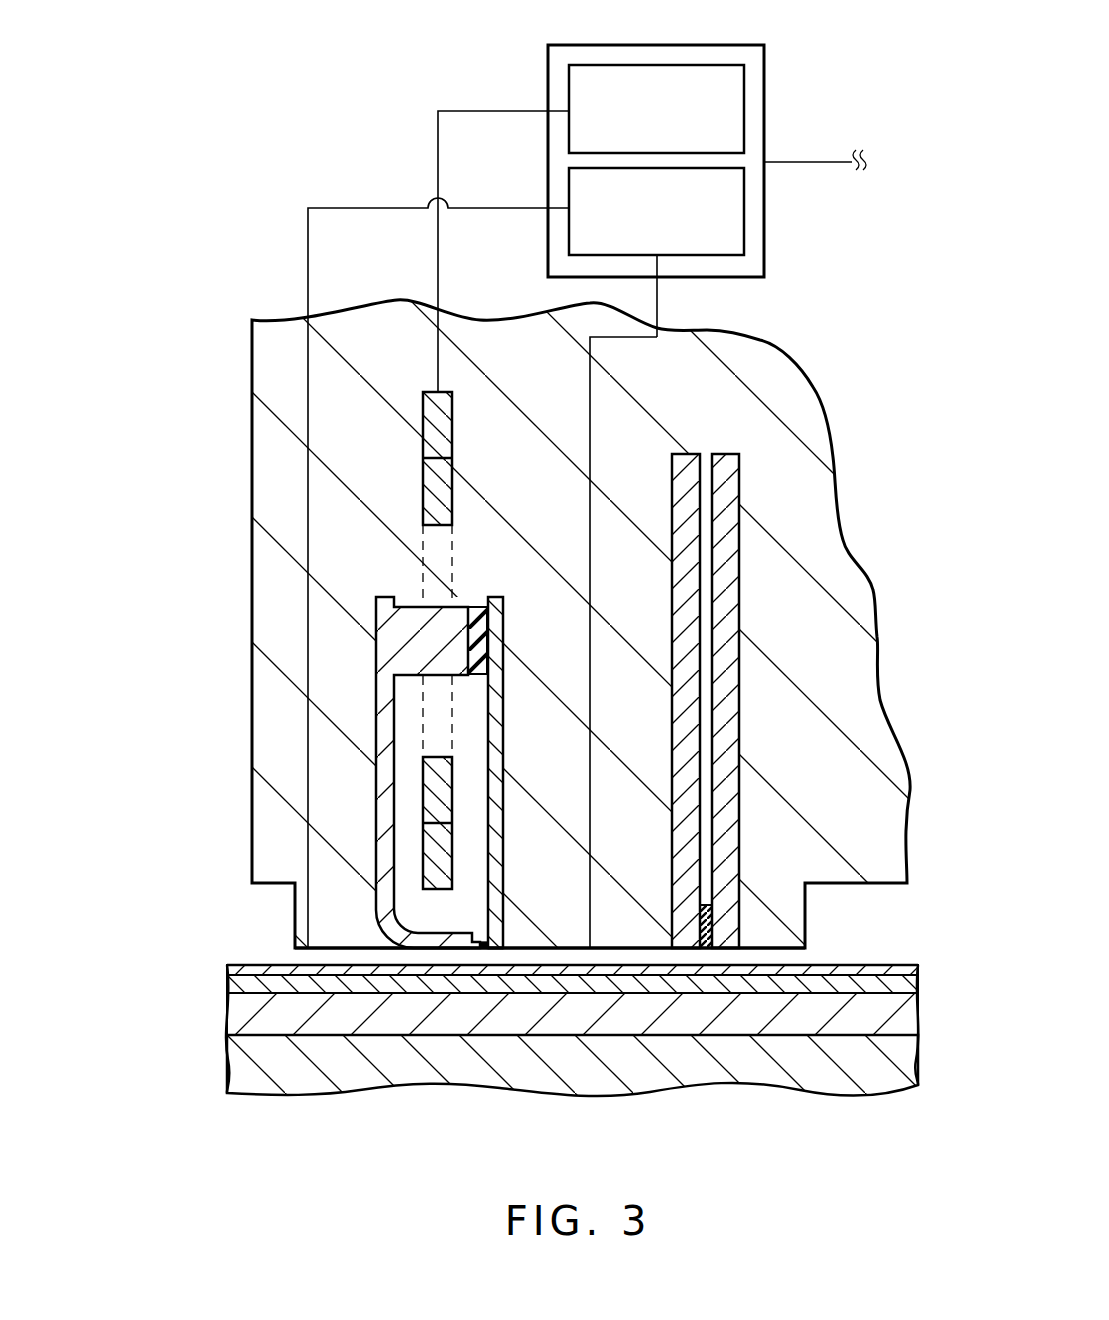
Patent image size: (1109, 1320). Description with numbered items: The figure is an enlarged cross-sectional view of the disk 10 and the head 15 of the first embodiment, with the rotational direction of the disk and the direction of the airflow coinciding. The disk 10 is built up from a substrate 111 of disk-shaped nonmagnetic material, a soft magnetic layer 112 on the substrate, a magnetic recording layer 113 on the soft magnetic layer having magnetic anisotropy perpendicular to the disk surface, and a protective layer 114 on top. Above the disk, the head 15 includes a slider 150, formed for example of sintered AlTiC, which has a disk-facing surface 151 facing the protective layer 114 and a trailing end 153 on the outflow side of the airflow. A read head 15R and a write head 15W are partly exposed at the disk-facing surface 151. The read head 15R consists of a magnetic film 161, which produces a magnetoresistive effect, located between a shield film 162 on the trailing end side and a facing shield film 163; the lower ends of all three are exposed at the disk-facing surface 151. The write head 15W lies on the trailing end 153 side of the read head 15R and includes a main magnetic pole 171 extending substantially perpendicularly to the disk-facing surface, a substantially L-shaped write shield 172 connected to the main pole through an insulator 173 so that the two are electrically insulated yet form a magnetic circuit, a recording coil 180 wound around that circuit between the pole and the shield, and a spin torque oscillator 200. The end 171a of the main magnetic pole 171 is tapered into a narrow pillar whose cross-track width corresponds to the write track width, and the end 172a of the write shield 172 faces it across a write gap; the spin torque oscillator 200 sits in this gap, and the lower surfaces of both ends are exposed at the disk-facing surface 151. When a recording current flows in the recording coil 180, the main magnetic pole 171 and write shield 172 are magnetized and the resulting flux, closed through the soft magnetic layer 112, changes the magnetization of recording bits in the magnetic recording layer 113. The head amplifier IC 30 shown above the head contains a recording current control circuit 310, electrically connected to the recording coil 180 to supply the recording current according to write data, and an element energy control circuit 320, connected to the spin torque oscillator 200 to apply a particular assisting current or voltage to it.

The head amplifier IC 30 is at (690, 44).
The recording current control circuit 310 is at (744, 107).
The element energy control circuit 320 is at (744, 215).
The trailing end 153 is at (252, 540).
The head 15 is at (153, 595).
The write head 15W is at (513, 392).
The recording coil 180 is at (423, 490).
The write shield 172 is at (370, 753).
The insulator 173 is at (477, 637).
The main magnetic pole 171 is at (503, 796).
The spin torque oscillator 200 is at (478, 948).
The end of the write shield 172a is at (403, 940).
The end of the main magnetic pole 171a is at (505, 948).
The shield film 162 is at (688, 682).
The shield film 163 is at (725, 640).
The magnetic film 161 is at (706, 918).
The read head 15R is at (760, 569).
The slider 150 is at (805, 400).
The disk-facing surface 151 is at (780, 955).
The disk 10 is at (119, 982).
The protective layer 114 is at (227, 968).
The magnetic recording layer 113 is at (227, 989).
The soft magnetic layer 112 is at (232, 1022).
The substrate 111 is at (228, 1066).